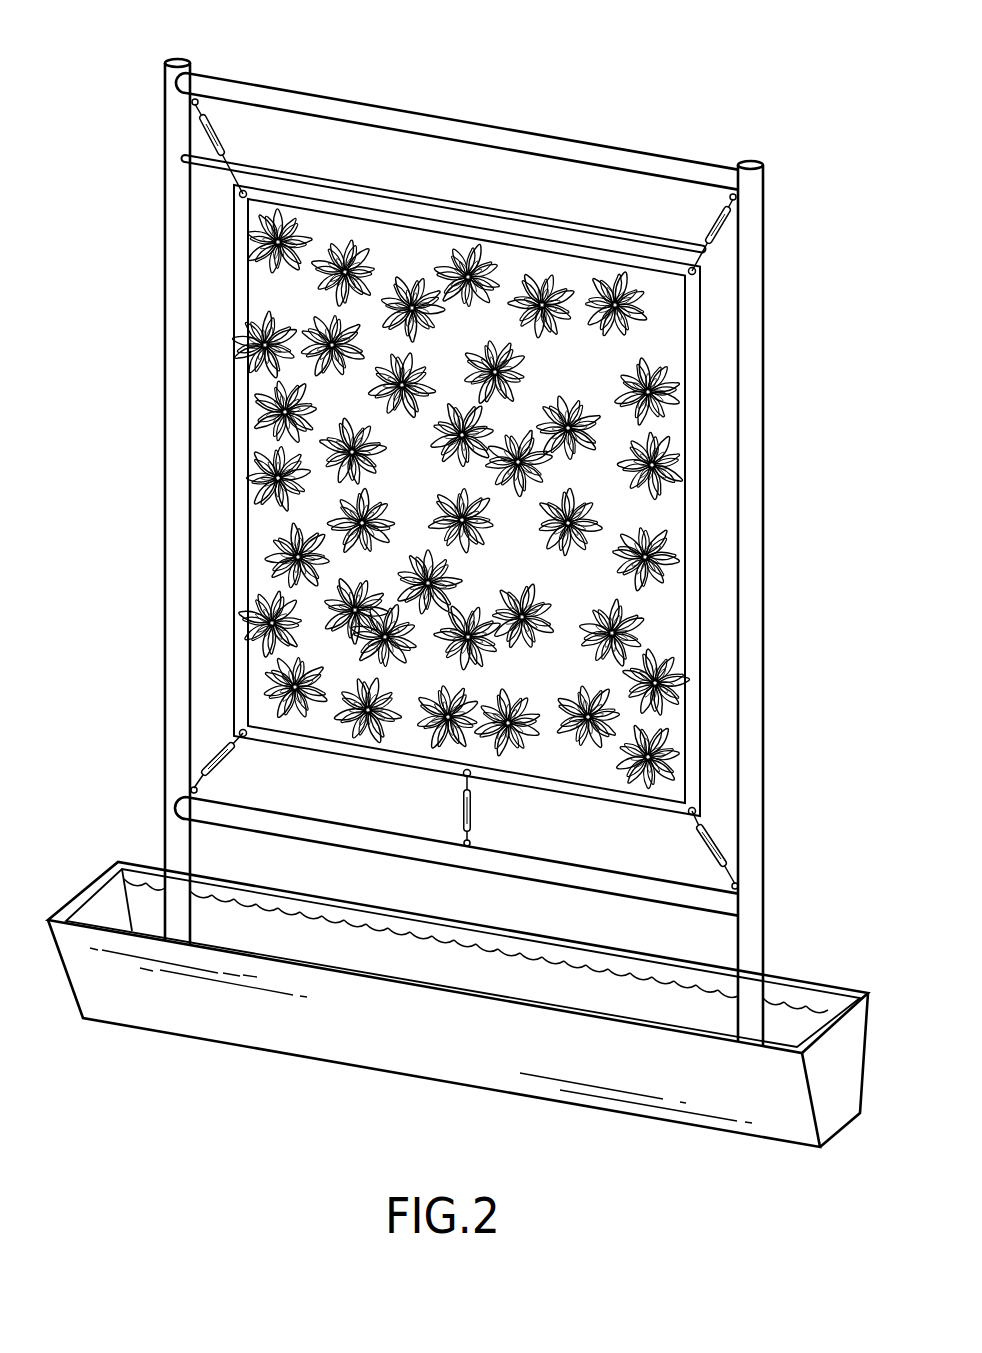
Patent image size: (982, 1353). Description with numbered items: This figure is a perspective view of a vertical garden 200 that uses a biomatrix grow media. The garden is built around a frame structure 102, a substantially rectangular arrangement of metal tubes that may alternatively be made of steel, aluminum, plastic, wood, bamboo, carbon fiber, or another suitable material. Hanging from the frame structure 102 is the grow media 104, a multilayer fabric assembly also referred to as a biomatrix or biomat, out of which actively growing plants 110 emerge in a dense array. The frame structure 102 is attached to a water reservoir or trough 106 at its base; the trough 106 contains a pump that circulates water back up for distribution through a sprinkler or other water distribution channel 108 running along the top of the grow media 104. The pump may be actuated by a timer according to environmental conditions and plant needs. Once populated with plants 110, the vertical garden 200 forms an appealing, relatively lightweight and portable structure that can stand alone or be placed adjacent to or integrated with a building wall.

The plant growing assembly 200 is at (730, 53).
The frame structure 102 is at (763, 205).
The grow media 104 is at (673, 342).
The trough 106 is at (708, 1130).
The water distribution channel 108 is at (462, 200).
The plants 110 is at (667, 466).